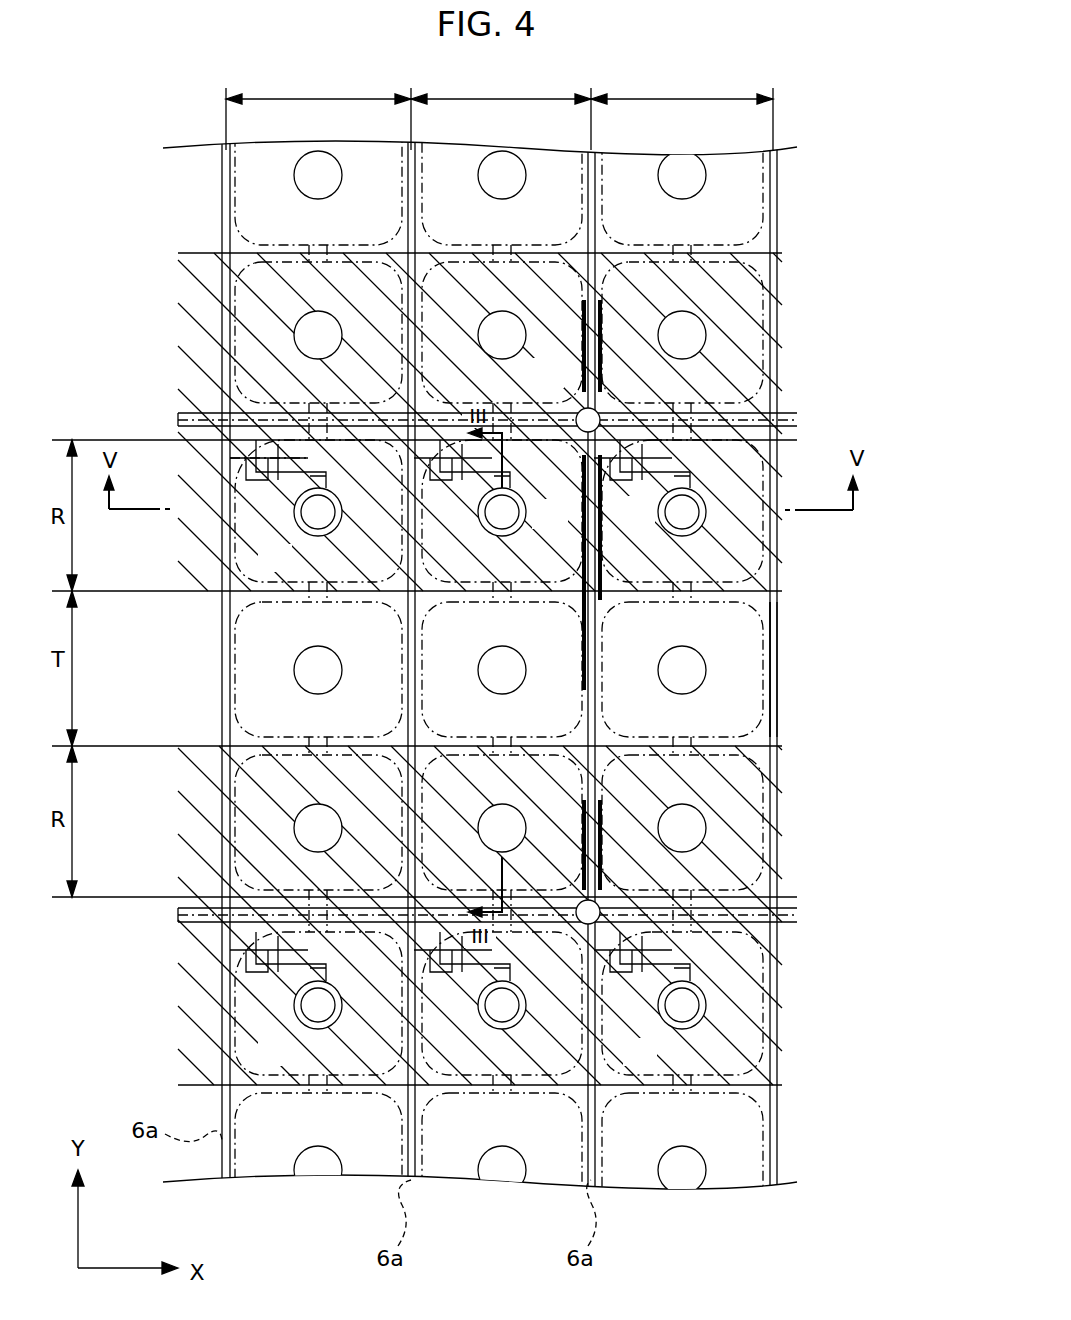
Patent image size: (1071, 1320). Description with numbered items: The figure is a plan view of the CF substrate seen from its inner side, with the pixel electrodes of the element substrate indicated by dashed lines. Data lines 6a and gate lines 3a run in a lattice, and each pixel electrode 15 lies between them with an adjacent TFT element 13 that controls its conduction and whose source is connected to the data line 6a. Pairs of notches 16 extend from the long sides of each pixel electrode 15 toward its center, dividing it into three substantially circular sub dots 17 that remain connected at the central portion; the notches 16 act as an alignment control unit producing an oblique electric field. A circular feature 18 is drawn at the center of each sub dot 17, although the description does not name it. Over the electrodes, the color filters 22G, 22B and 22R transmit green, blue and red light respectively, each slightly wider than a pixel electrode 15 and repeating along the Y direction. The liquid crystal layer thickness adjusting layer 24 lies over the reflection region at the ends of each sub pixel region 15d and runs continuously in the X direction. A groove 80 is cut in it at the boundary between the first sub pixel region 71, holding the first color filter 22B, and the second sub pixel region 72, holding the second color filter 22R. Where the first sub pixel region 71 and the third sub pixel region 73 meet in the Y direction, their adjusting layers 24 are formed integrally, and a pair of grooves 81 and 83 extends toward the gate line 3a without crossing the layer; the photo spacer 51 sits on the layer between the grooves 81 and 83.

The third color filter 22G is at (318, 86).
The first color filter 22B is at (501, 86).
The second color filter 22R is at (682, 86).
The groove 83 is at (596, 305).
The photo spacer 51 is at (600, 416).
The liquid crystal layer thickness adjusting layer 24 is at (212, 413).
The gate line 3a is at (797, 922).
The third sub pixel region 73 is at (533, 385).
The first sub pixel region 71 is at (538, 526).
The second sub pixel region 72 is at (625, 523).
The TFT element 13 is at (630, 984).
The groove 80 is at (738, 572).
The groove 81 is at (592, 560).
The pixel electrode 15 is at (770, 648).
The sub pixel region 15d is at (772, 648).
The sub dot 17 is at (766, 660).
The notch 16 is at (768, 744).
The opening 18 is at (706, 826).
The data line 6a is at (591, 1180).